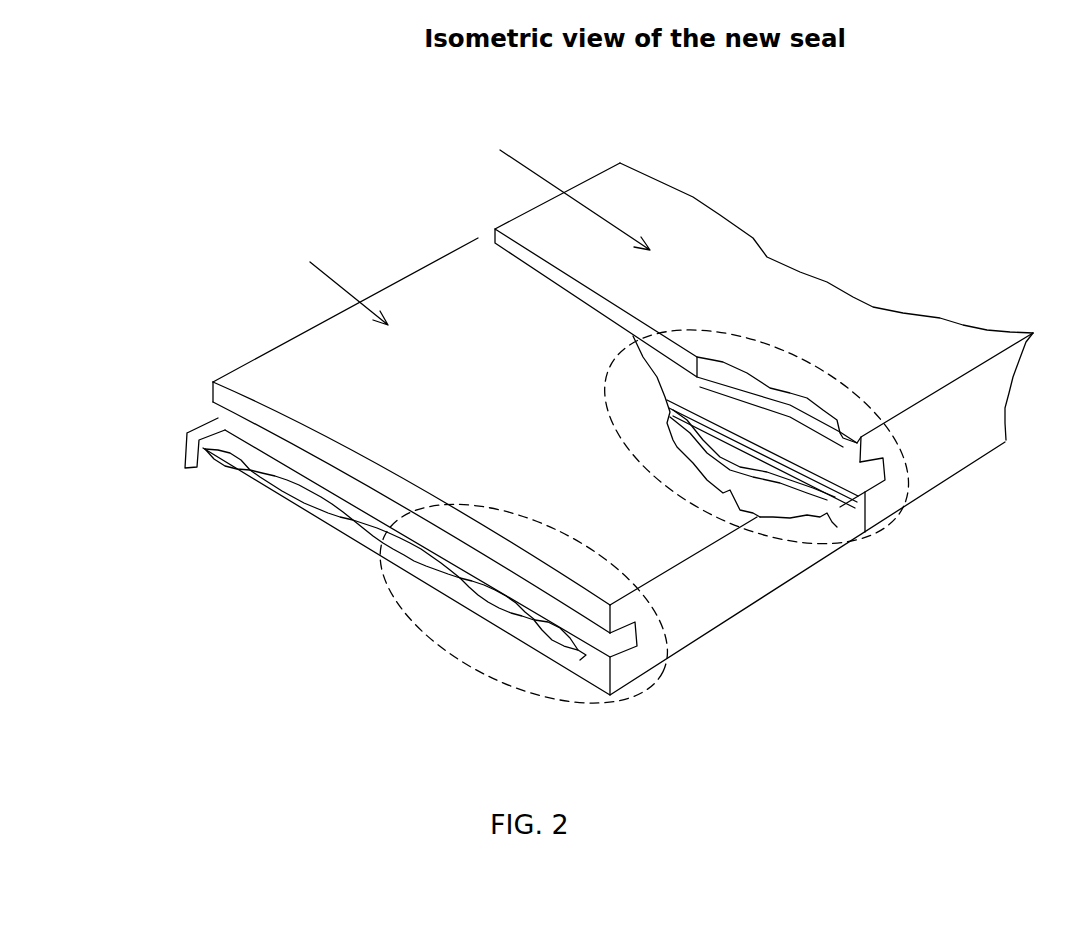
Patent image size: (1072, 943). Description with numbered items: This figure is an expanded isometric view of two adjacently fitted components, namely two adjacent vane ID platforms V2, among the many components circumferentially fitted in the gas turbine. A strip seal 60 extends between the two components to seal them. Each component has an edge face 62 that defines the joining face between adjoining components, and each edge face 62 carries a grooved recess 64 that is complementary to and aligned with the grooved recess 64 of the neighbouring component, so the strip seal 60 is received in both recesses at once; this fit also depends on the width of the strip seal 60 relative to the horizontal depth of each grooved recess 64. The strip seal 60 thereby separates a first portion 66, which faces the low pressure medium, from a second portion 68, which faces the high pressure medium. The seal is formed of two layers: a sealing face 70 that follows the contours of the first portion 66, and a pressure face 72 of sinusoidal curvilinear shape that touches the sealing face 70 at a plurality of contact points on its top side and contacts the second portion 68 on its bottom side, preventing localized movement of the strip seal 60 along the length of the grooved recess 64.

The strip seal 60 is at (620, 646).
The edge face 62 is at (590, 612).
The grooved recess 64 is at (651, 625).
The first portion 66 is at (918, 389).
The second portion 68 is at (929, 512).
The sealing face 70 is at (225, 433).
The pressure face 72 is at (269, 500).
The vane ID platform V2 is at (465, 227).